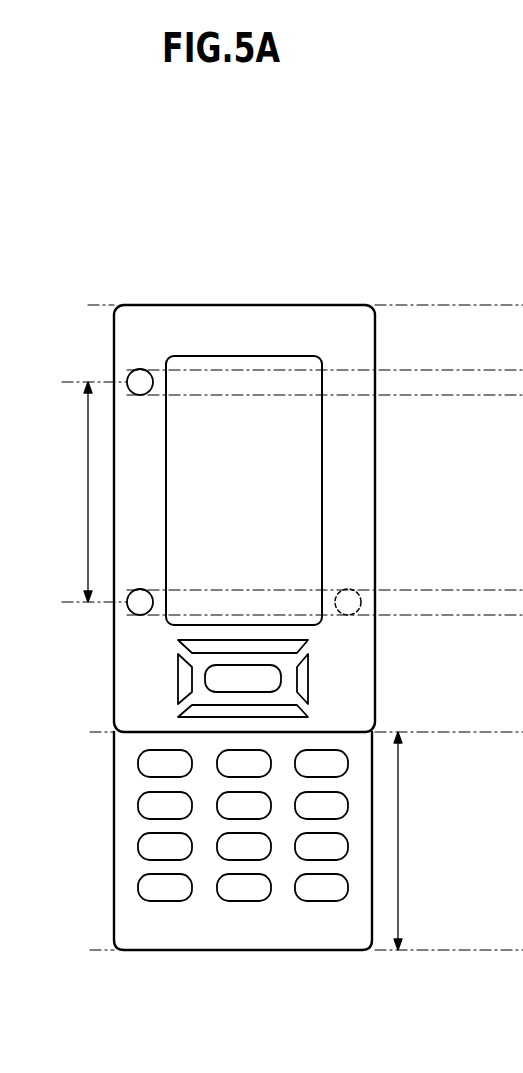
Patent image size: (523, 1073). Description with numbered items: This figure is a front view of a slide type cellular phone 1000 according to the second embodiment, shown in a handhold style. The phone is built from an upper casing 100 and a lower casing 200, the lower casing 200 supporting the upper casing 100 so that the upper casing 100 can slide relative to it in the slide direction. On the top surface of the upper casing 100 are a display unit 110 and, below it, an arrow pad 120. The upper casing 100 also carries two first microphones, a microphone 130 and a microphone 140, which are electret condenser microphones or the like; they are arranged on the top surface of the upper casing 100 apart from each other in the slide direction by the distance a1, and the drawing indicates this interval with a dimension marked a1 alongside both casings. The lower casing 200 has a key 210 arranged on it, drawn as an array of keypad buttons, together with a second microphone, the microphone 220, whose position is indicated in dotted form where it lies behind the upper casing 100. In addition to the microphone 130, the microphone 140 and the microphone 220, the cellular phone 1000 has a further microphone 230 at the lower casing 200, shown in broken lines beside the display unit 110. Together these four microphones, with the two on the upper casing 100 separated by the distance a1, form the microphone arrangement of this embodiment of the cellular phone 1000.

The cellular phone 1000 is at (218, 230).
The upper casing 100 is at (335, 320).
The display unit 110 is at (310, 465).
The arrow pad 120 is at (172, 632).
The microphone 130 is at (140, 369).
The microphone 140 is at (128, 606).
The lower casing 200 is at (293, 925).
The key 210 is at (138, 743).
The microphone 220 is at (139, 601).
The microphone 230 is at (348, 602).
The distance a1 is at (88, 482).